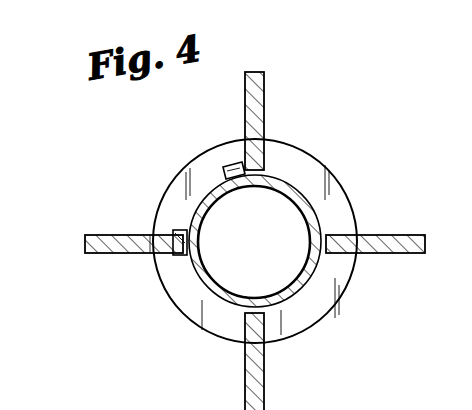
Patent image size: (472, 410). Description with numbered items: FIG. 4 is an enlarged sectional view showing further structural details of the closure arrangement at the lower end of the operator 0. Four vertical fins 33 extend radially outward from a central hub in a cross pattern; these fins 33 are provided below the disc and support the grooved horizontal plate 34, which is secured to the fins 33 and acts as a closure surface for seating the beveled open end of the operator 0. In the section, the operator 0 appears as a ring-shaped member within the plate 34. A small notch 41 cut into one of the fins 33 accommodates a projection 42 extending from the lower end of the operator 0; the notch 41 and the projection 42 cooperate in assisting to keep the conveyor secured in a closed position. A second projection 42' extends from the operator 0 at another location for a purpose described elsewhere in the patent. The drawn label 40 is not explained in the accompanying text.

The vertical fins 33 is at (264, 92).
The grooved horizontal plate 34 is at (308, 165).
The bore ring 0 is at (279, 245).
The bore ring 40 is at (307, 208).
The small notch 41 is at (152, 255).
The projection 42 is at (146, 268).
The second projection 42' is at (206, 143).